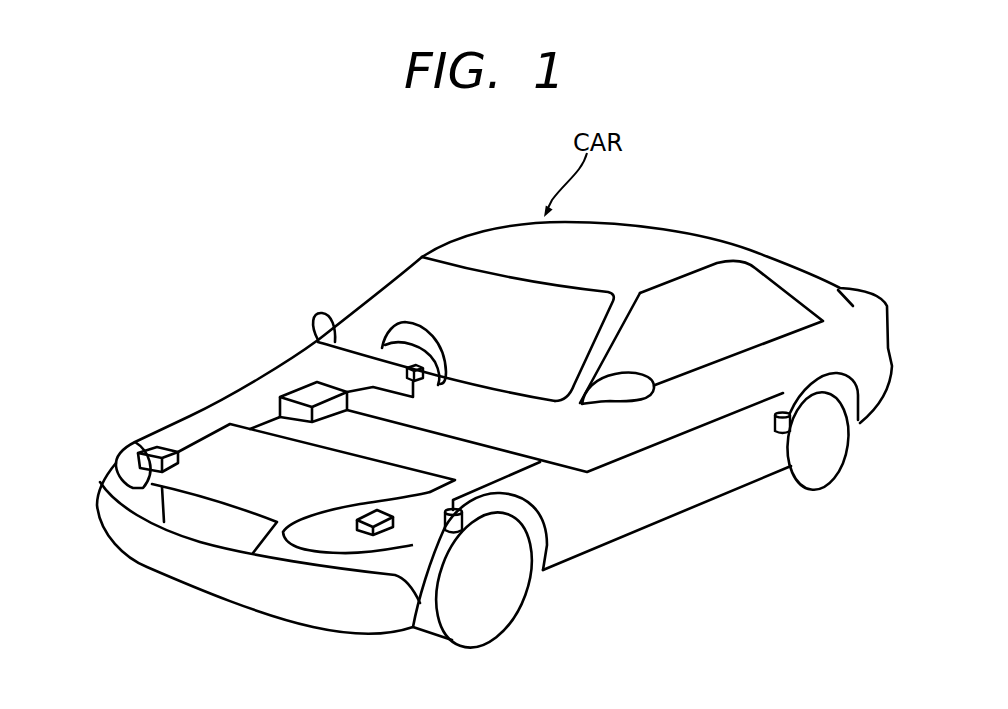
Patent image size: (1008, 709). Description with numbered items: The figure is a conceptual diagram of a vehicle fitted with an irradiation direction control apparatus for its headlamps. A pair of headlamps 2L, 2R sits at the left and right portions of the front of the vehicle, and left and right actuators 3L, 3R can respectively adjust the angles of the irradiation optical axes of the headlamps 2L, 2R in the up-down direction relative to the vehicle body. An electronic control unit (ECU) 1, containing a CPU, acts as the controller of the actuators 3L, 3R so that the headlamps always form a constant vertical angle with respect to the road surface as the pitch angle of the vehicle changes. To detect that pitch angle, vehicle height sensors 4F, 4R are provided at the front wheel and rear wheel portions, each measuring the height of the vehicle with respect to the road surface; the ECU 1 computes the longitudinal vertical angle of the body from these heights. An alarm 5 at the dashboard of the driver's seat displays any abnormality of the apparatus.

The electronic control unit (ECU) 1 is at (308, 392).
The headlamp 2R is at (119, 460).
The headlamp 2L is at (318, 543).
The actuator 3R is at (158, 448).
The actuator 3L is at (384, 535).
The vehicle height sensor 4F is at (462, 533).
The vehicle height sensor 4R is at (780, 434).
The alarm 5 is at (415, 364).